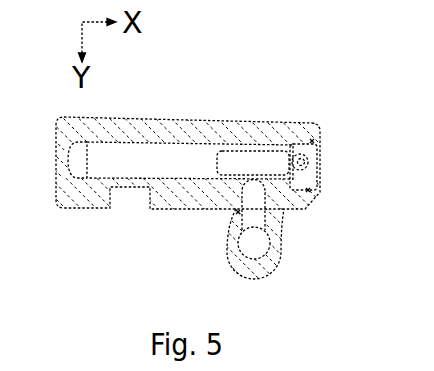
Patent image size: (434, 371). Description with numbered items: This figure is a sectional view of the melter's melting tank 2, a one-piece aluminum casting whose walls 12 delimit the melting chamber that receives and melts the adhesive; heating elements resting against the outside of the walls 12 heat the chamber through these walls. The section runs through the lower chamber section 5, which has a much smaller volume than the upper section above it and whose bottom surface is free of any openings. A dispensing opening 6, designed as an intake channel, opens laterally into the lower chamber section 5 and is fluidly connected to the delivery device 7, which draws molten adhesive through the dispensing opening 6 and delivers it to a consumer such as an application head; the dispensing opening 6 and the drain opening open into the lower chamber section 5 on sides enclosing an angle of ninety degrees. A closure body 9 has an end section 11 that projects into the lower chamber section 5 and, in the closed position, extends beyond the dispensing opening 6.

The melting tank 2 is at (211, 80).
The lower chamber section 5 is at (142, 158).
The dispensing opening 6 is at (252, 195).
The delivery device 7 is at (213, 272).
The closure body 9 is at (345, 154).
The end section 11 is at (245, 157).
The walls 12 is at (288, 193).